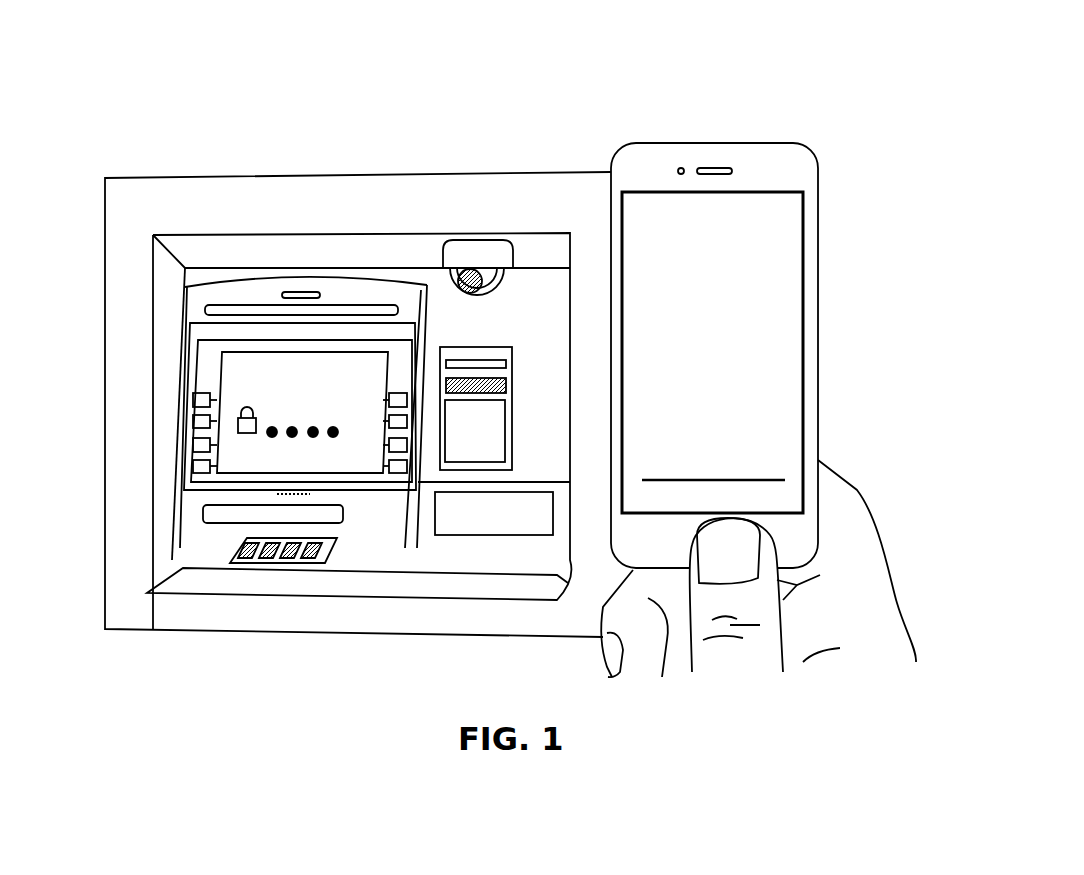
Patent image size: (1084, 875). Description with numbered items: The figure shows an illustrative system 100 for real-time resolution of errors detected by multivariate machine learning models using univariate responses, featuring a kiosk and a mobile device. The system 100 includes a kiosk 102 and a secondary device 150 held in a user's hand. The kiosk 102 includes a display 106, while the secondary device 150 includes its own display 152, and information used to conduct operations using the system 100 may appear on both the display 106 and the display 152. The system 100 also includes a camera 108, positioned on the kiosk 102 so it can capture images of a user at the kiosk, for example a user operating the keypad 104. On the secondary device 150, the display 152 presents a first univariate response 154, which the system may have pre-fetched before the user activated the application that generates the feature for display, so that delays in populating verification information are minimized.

The system 100 is at (529, 51).
The kiosk 102 is at (237, 143).
The keypad 104 is at (243, 498).
The display 106 is at (258, 403).
The camera 108 is at (498, 196).
The secondary device 150 is at (842, 311).
The display 152 is at (768, 297).
The first univariate response 154 is at (765, 457).